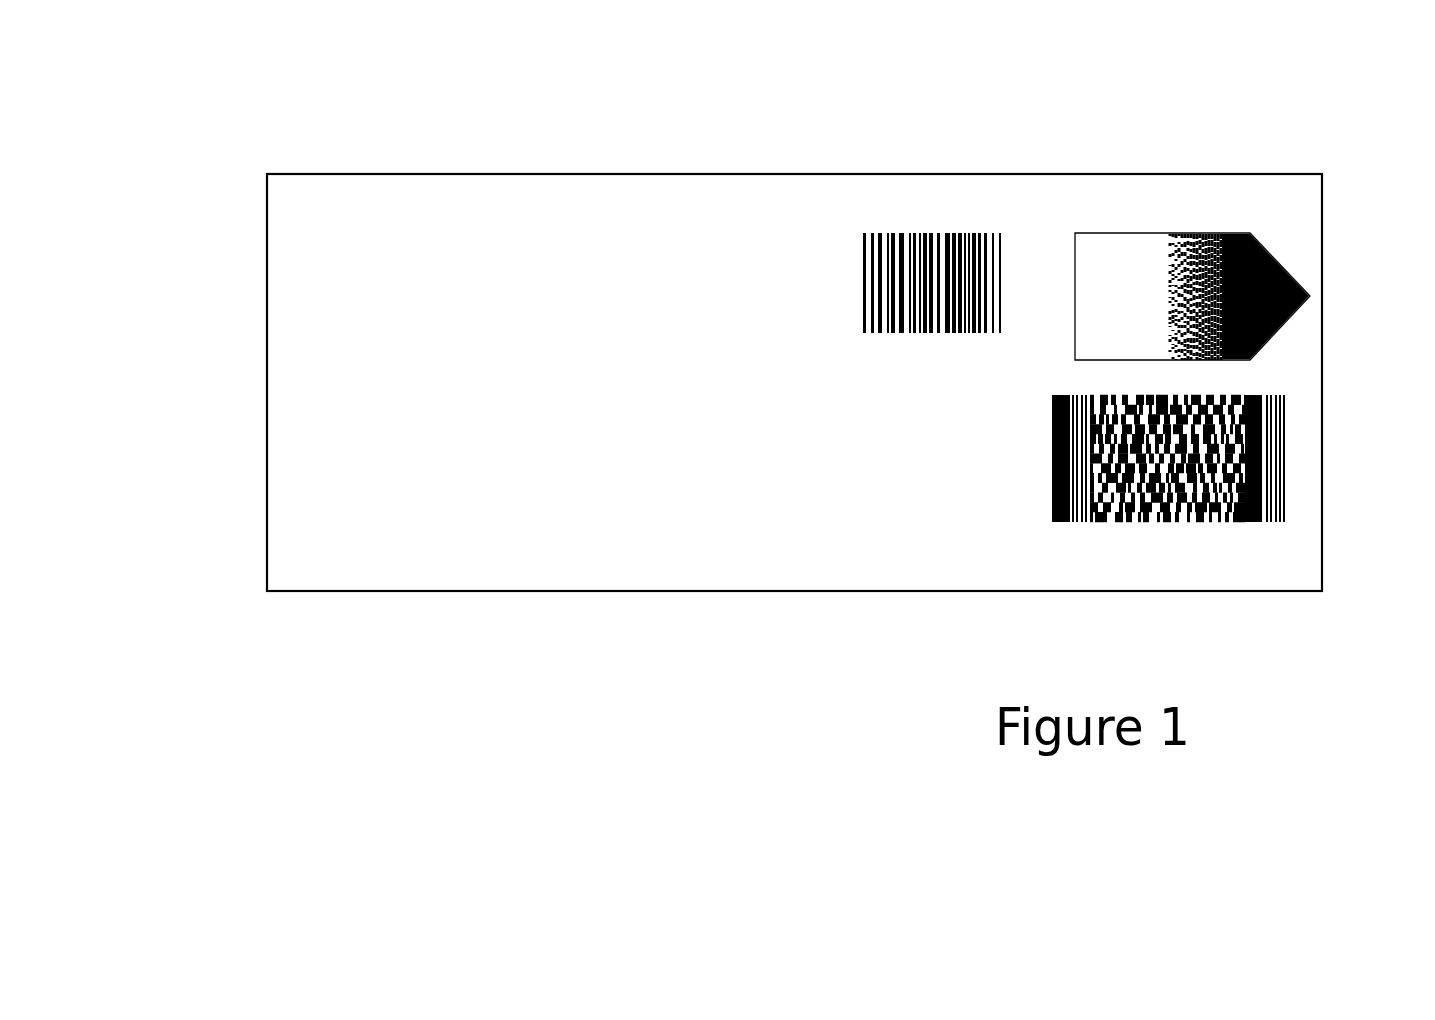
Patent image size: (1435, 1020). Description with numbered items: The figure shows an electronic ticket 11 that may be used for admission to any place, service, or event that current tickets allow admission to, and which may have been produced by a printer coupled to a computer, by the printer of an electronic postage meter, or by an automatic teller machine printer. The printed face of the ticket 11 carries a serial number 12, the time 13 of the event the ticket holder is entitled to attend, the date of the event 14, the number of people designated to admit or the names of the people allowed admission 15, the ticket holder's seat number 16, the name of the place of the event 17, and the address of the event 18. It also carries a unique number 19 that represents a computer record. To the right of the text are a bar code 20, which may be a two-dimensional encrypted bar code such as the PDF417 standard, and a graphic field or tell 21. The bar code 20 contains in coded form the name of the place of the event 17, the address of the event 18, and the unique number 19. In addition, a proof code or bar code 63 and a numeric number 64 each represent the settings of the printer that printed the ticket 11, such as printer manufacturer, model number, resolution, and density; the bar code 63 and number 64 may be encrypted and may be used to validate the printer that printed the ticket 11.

The electronic ticket 11 is at (820, 140).
The serial number 12 is at (292, 278).
The time 13 is at (292, 318).
The date of the event 14 is at (292, 360).
The number of people designated to admit 15 is at (292, 418).
The seat number 16 is at (292, 457).
The name of the place of the event 17 is at (302, 508).
The address of the event 18 is at (630, 522).
The unique number 19 is at (292, 232).
The bar code 20 is at (1297, 477).
The graphic field or tell 21 is at (1142, 232).
The proof code or bar code 63 is at (922, 222).
The numeric number 64 is at (572, 220).